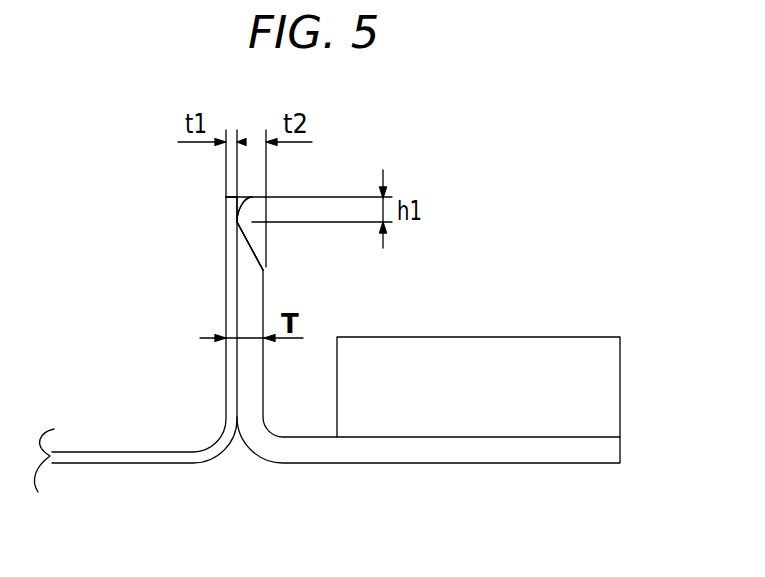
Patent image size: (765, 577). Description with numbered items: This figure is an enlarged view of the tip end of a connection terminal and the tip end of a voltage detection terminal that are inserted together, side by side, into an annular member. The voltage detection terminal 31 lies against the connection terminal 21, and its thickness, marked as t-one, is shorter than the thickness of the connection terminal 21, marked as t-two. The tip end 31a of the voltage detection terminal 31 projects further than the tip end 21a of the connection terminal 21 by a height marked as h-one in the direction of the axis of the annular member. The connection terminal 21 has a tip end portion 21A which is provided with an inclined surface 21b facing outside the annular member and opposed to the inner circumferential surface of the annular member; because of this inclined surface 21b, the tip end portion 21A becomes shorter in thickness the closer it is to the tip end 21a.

The voltage detection terminal 31 is at (117, 465).
The tip end of the voltage detection terminal 31a is at (227, 194).
The connection terminal 21 is at (440, 465).
The tip end of the connection terminal 21a is at (248, 200).
The inclined surface 21b is at (257, 252).
The tip end portion of the connection terminal 21A is at (291, 272).